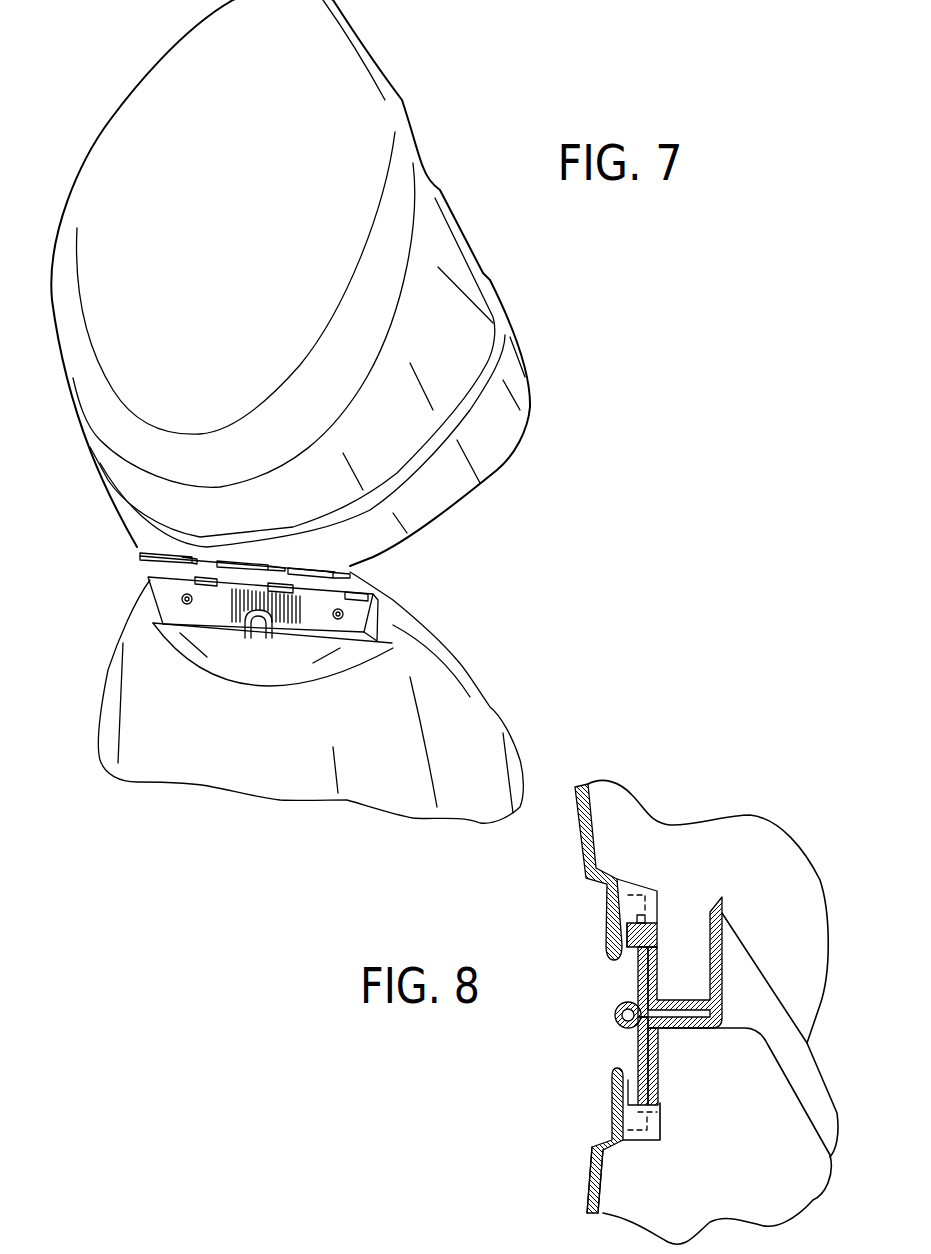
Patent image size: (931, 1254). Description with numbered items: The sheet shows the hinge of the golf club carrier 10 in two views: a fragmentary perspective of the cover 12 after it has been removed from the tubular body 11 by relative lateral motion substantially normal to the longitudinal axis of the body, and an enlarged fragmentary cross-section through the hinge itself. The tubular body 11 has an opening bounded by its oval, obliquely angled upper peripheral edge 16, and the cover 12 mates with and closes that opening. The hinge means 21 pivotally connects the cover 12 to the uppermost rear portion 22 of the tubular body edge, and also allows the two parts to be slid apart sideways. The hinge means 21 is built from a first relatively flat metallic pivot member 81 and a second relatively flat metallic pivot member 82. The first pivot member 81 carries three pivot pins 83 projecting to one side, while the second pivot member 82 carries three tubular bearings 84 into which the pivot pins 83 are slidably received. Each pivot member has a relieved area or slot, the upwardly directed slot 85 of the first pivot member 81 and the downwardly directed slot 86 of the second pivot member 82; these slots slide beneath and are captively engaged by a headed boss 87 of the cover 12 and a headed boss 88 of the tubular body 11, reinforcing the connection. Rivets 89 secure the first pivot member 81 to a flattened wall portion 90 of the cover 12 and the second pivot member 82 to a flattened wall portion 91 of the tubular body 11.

In FIG. 7, the carrier 10 is at (560, 548).
In FIG. 8, the carrier 10 is at (715, 775).
In FIG. 7, the tubular body 11 is at (468, 748).
In FIG. 8, the tubular body 11 is at (773, 1182).
In FIG. 7, the cover 12 is at (412, 103).
In FIG. 8, the cover 12 is at (770, 853).
In FIG. 7, the upper peripheral edge 16 is at (477, 680).
In FIG. 7, the hinge means 21 is at (124, 578).
In FIG. 8, the hinge means 21 is at (541, 1041).
In FIG. 7, the uppermost rear portion 22 is at (253, 677).
In FIG. 8, the uppermost rear portion 22 is at (587, 1180).
In FIG. 8, the first pivot member 81 is at (637, 980).
In FIG. 8, the second pivot member 82 is at (637, 1055).
In FIG. 7, the pivot pin 83 is at (183, 557).
In FIG. 8, the pivot pin 83 is at (613, 1017).
In FIG. 7, the tubular bearing 84 is at (373, 578).
In FIG. 8, the slot 85 is at (660, 917).
In FIG. 8, the slot 86 is at (658, 1112).
In FIG. 8, the headed boss 87 is at (607, 945).
In FIG. 7, the headed boss 88 is at (257, 636).
In FIG. 8, the headed boss 88 is at (610, 1085).
In FIG. 7, the rivet 89 is at (185, 602).
In FIG. 8, the flattened wall portion 90 is at (660, 962).
In FIG. 8, the flattened wall portion 91 is at (658, 1062).